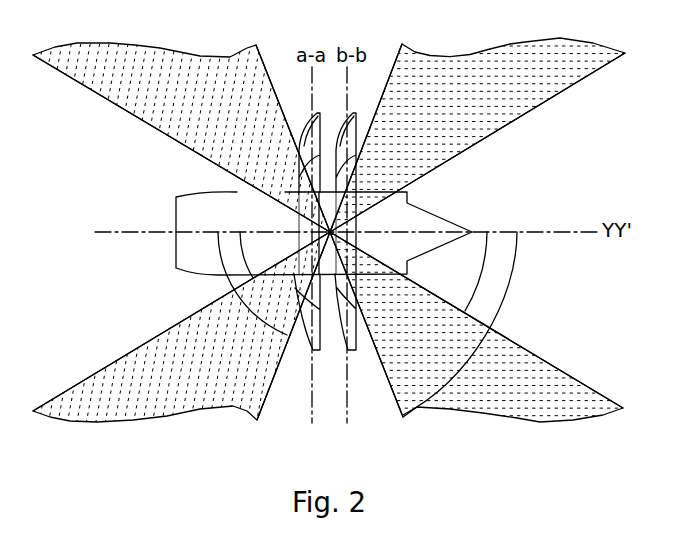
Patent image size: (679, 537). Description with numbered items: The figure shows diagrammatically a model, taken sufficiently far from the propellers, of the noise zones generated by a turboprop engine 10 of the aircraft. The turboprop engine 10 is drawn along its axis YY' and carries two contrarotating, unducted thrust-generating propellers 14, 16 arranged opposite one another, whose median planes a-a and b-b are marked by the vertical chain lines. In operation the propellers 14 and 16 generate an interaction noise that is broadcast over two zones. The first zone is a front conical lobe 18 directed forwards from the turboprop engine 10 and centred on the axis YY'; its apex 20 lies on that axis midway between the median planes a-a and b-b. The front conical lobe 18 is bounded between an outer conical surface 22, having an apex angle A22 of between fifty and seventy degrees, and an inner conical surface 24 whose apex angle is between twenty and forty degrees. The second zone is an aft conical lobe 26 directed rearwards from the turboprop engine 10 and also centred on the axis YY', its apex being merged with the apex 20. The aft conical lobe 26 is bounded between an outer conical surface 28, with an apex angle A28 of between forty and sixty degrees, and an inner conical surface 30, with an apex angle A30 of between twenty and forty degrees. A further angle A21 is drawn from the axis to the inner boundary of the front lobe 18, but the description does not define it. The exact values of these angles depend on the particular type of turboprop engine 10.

The turboprop engine 10 is at (176, 213).
The propeller 14 is at (351, 117).
The propeller 16 is at (301, 131).
The front conical lobe 18 is at (100, 95).
The apex 20 is at (303, 228).
The outer conical surface 22 is at (67, 77).
The inner conical surface 24 is at (266, 67).
The aft conical lobe 26 is at (537, 106).
The outer conical surface 28 is at (402, 47).
The inner conical surface 30 is at (492, 135).
The angle A21 is at (215, 271).
The apex angle of outer conical surface 22 A22 is at (244, 258).
The apex angle of outer conical surface 28 A28 is at (513, 280).
The apex angle of inner conical surface 30 A30 is at (489, 238).